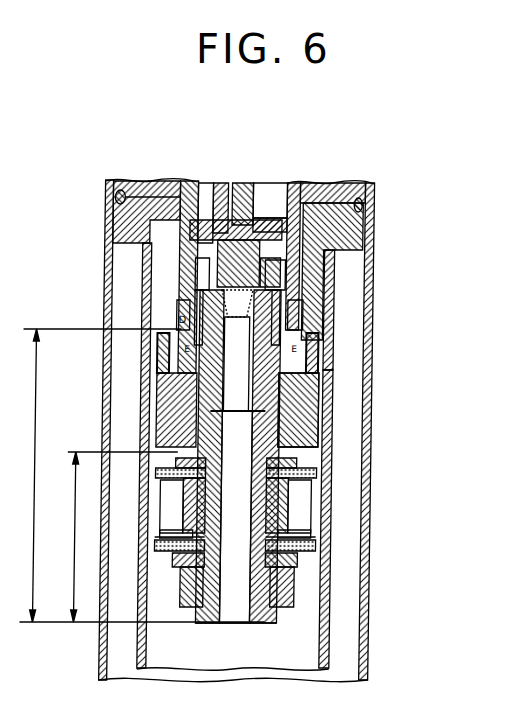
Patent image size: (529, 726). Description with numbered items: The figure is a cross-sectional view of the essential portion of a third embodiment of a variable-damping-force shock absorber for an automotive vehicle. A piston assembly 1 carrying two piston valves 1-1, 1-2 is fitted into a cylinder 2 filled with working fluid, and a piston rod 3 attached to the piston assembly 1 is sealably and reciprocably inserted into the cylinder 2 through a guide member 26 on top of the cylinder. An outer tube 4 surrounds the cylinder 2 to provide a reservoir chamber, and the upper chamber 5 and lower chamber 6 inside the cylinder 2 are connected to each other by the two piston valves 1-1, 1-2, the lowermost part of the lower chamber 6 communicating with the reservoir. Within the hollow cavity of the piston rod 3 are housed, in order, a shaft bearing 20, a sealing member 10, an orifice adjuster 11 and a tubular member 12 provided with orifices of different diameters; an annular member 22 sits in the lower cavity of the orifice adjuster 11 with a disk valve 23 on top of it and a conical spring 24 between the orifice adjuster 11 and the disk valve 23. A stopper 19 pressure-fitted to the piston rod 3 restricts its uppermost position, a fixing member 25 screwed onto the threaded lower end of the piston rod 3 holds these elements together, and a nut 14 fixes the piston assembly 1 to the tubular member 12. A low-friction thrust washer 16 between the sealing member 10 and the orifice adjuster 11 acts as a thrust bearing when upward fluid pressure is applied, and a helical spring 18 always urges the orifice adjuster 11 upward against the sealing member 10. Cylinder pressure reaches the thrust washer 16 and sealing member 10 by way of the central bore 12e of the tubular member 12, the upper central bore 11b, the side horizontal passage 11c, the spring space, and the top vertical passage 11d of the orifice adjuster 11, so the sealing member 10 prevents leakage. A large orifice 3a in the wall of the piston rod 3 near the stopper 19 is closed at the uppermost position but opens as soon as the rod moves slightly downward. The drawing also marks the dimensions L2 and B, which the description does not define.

The piston assembly 1 is at (326, 530).
The piston valve 1-1 is at (290, 478).
The piston valve 1-2 is at (153, 530).
The cylinder 2 is at (331, 297).
The piston rod 3 is at (290, 193).
The large orifice 3a is at (178, 312).
The outer tube 4 is at (313, 332).
The upper chamber 5 is at (318, 378).
The lower chamber 6 is at (308, 607).
The sealing member 10 is at (320, 195).
The orifice adjuster 11 is at (330, 258).
The upper central bore 11b is at (316, 277).
The side horizontal passage 11c is at (198, 275).
The top vertical passage 11d is at (204, 205).
The tubular member 12 is at (245, 495).
The central bore 12e is at (322, 512).
The nut 14 is at (280, 605).
The thrust washer 16 is at (116, 201).
The helical spring 18 is at (140, 254).
The stopper 19 is at (322, 403).
The shaft bearing 20 is at (267, 205).
The annular member 22 is at (295, 415).
The disk valve 23 is at (308, 348).
The conical spring 24 is at (256, 305).
The fixing member 25 is at (305, 448).
The guide member 26 is at (360, 212).
The length dimension L2 is at (143, 475).
The stroke dimension B is at (121, 537).